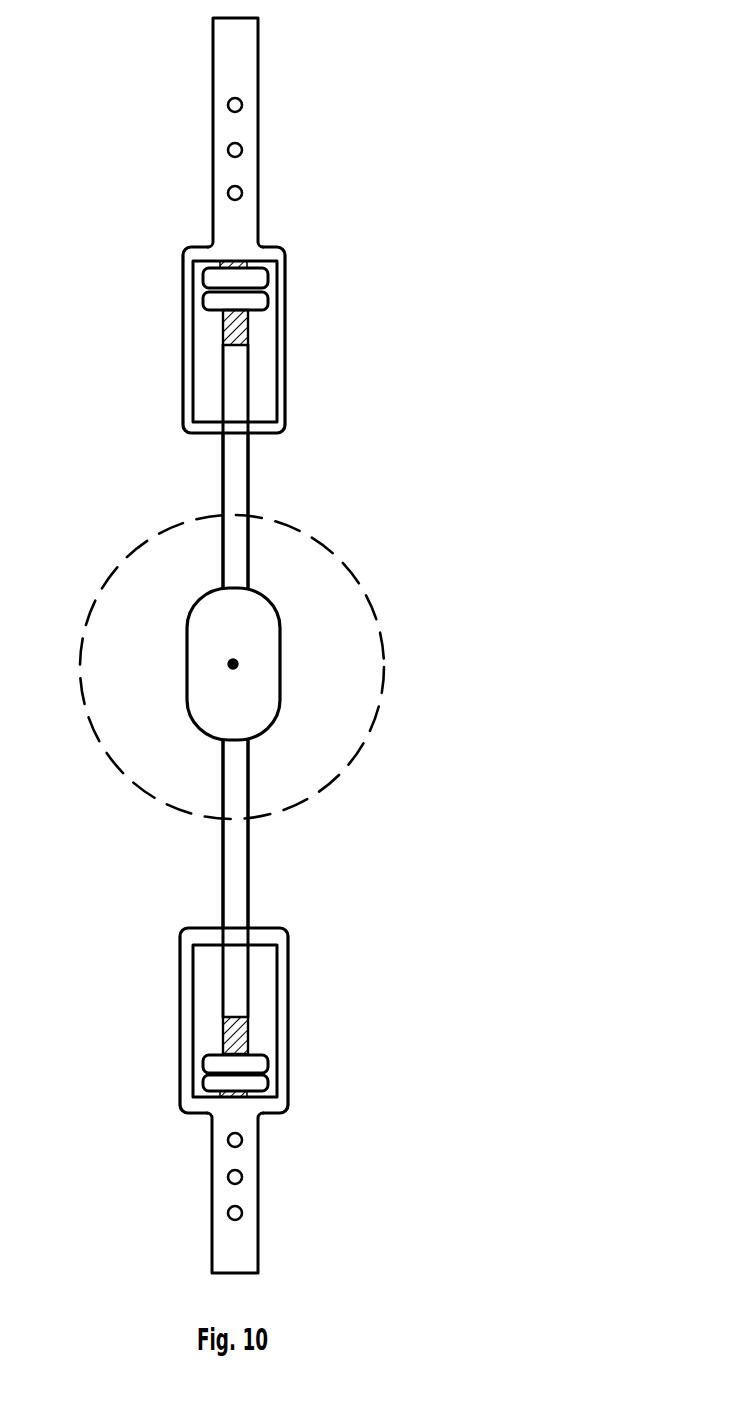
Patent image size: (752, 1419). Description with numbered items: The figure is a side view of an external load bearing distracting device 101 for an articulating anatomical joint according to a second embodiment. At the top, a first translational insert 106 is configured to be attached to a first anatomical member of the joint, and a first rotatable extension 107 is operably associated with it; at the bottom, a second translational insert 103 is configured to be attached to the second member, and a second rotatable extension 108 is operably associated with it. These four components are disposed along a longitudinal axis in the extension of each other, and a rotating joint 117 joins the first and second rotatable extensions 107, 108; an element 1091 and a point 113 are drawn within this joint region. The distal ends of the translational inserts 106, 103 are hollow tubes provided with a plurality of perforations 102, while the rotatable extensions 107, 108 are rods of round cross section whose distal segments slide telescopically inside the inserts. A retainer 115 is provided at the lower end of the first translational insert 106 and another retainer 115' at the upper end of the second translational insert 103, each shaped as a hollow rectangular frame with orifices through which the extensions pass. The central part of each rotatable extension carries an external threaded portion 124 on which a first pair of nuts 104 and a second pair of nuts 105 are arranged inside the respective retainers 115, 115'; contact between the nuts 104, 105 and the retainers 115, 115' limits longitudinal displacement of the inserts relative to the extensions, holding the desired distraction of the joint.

The external load bearing distracting device 101 is at (409, 385).
The perforations 102 is at (228, 193).
The second translational insert 103 is at (243, 1160).
The first pair of nuts 104 is at (262, 302).
The second pair of nuts 105 is at (262, 1082).
The first translational insert 106 is at (235, 72).
The first rotatable extension 107 is at (222, 573).
The second rotatable extension 108 is at (241, 828).
The oval connector plate 1091 is at (267, 677).
The pivot point 113 is at (230, 669).
The first retainer 115 is at (171, 340).
The second retainer 115' is at (173, 1020).
The rotating joint 117 is at (357, 581).
The external threaded portion 124 is at (223, 336).